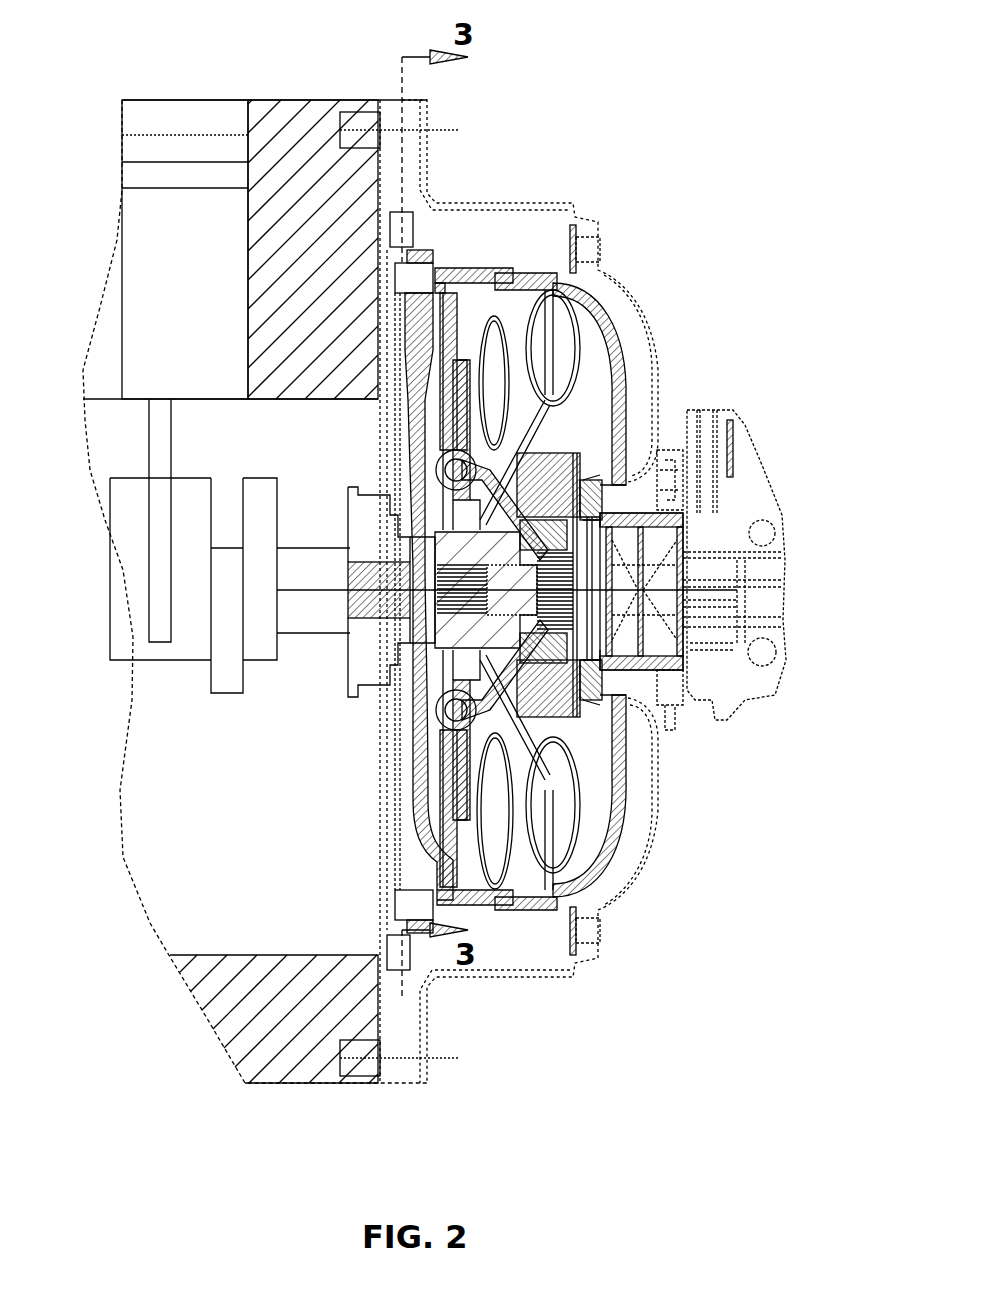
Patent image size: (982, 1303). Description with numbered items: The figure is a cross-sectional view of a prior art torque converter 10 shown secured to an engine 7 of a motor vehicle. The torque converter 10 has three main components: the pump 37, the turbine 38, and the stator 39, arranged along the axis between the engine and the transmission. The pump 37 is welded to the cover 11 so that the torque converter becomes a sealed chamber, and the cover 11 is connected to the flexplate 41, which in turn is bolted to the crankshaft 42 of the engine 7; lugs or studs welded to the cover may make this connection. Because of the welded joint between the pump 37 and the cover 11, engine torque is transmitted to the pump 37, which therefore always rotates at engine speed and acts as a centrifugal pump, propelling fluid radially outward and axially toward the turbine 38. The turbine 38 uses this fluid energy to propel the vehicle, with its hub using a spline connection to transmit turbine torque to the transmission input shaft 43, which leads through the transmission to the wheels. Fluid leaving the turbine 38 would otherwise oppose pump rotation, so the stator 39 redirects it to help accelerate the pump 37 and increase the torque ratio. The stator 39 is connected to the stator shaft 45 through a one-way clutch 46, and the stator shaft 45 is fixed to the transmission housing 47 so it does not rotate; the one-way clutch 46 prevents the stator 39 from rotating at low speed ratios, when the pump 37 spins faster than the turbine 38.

The engine 7 is at (392, 990).
The torque converter 10 is at (620, 322).
The cover 11 is at (400, 433).
The pump 37 is at (617, 858).
The turbine 38 is at (480, 862).
The stator 39 is at (527, 760).
The flexplate 41 is at (397, 743).
The crankshaft 42 is at (333, 640).
The transmission input shaft 43 is at (718, 607).
The stator shaft 45 is at (715, 532).
The one-way clutch 46 is at (583, 693).
The transmission housing 47 is at (680, 378).